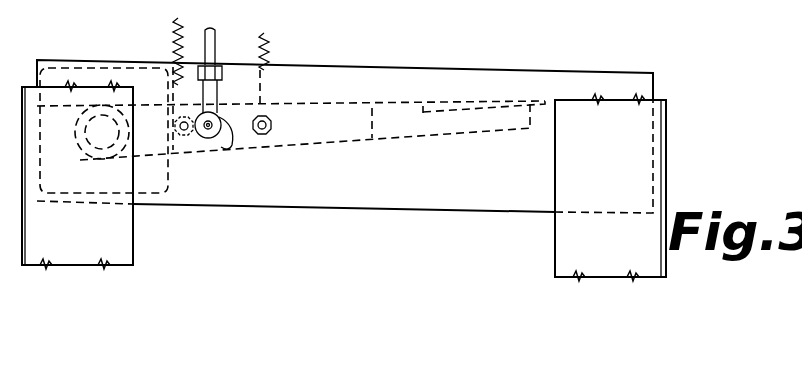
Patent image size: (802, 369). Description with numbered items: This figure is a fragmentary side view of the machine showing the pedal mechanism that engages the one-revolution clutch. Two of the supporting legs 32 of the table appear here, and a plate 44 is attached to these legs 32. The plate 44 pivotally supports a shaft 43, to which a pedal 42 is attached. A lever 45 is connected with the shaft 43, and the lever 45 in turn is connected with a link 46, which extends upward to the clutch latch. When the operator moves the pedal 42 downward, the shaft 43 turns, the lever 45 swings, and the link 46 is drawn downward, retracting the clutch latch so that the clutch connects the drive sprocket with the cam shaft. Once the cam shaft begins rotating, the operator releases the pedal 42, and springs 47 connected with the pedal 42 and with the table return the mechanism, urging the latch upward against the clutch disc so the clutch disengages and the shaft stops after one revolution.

The supporting legs 32 is at (129, 238).
The pedal 42 is at (490, 103).
The shaft 43 is at (98, 134).
The plate 44 is at (245, 200).
The lever 45 is at (226, 143).
The link 46 is at (216, 33).
The springs 47 is at (172, 38).